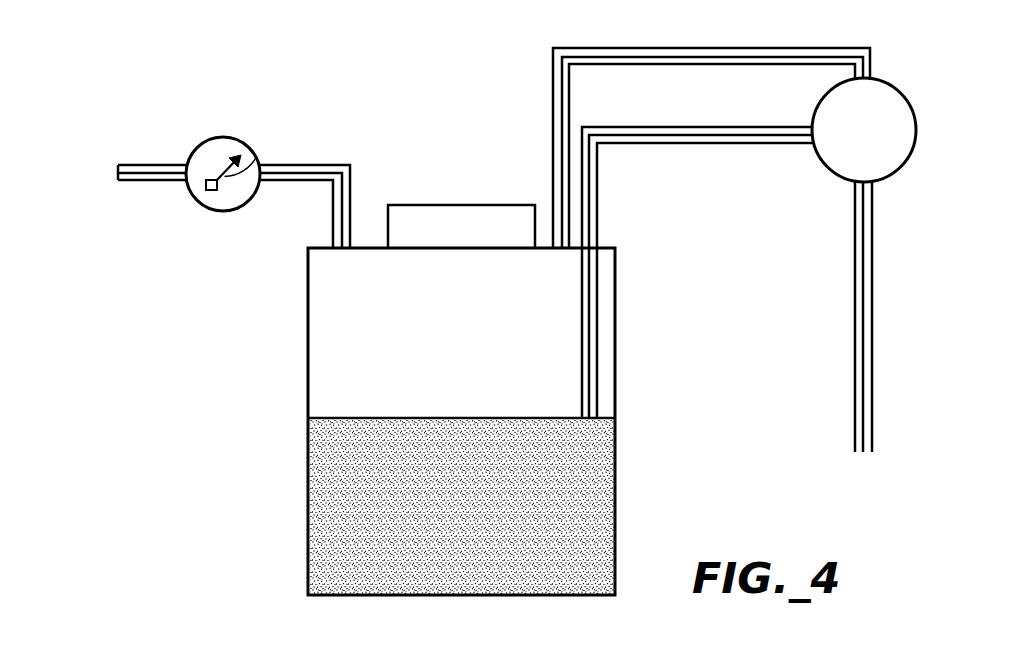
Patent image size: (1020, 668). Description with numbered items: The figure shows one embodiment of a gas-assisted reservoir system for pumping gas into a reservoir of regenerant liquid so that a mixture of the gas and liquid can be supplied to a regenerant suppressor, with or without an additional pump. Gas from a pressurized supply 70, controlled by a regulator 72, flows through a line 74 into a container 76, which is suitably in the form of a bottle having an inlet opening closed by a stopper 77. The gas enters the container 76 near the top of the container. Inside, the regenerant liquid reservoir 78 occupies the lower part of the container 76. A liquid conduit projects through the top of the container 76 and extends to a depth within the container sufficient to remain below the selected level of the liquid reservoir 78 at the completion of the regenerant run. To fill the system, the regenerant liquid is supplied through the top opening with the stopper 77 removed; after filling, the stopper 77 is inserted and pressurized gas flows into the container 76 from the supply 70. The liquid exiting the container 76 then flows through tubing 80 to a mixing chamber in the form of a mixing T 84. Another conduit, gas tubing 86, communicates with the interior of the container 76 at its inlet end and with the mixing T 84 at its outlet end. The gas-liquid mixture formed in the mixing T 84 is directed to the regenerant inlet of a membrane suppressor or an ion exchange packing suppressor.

The pressurized supply 70 is at (77, 158).
The regulator 72 is at (223, 137).
The line 74 is at (297, 163).
The container 76 is at (307, 370).
The stopper 77 is at (455, 203).
The regenerant liquid reservoir 78 is at (453, 417).
The tubing 80 is at (597, 343).
The mixing T 84 is at (826, 170).
The gas tubing 86 is at (698, 64).